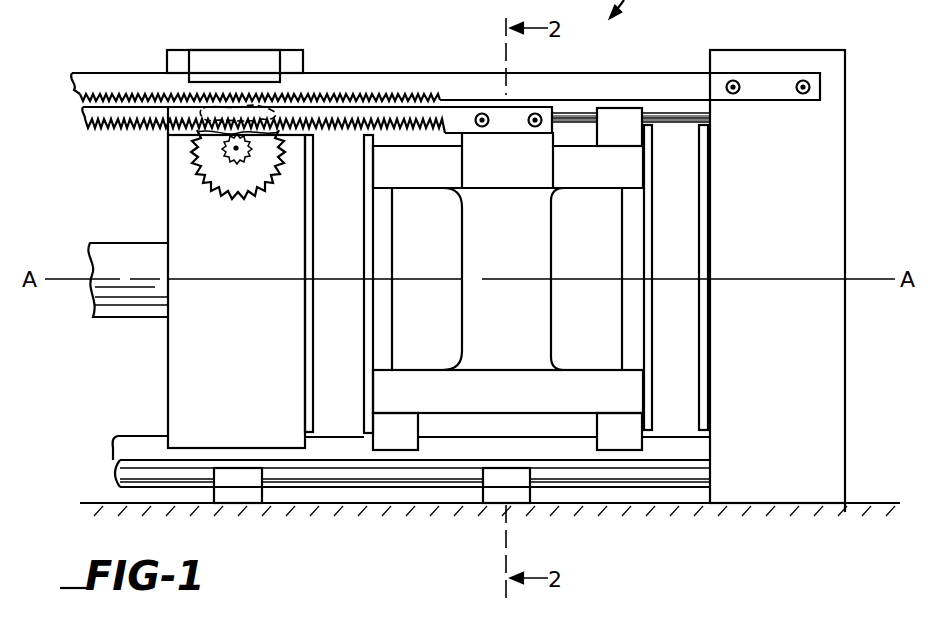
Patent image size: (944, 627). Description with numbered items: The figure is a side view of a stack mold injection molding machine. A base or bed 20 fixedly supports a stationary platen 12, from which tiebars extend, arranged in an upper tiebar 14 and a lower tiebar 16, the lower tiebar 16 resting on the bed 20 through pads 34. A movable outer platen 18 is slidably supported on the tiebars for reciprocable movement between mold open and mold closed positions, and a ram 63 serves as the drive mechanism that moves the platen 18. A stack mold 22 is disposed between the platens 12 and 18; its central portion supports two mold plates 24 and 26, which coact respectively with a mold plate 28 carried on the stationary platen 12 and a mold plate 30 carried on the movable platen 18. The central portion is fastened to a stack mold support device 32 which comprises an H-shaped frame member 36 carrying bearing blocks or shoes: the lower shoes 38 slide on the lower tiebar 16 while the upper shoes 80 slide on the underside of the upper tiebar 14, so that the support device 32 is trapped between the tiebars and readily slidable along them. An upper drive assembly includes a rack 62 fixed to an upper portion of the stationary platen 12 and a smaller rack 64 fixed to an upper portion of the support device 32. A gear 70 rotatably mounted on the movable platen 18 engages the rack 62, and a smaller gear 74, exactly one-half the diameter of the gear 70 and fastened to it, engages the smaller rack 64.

The stationary platen 12 is at (830, 182).
The upper tiebar 14 is at (667, 108).
The lower tiebar 16 is at (682, 466).
The movable outer platen 18 is at (186, 350).
The base or bed 20 is at (374, 512).
The stack mold 22 is at (611, 268).
The mold plate 24 is at (653, 212).
The mold plate 26 is at (363, 224).
The mold plate 28 is at (708, 178).
The mold plate 30 is at (309, 196).
The stack mold support device 32 is at (450, 311).
The pad 34 is at (240, 490).
The H-shaped frame member 36 is at (525, 315).
The lower bearing shoe 38 is at (626, 442).
The rack 62 is at (462, 85).
The ram 63 is at (118, 245).
The smaller rack 64 is at (371, 113).
The gear 70 is at (255, 105).
The smaller gear 74 is at (242, 165).
The upper bearing shoe 80 is at (618, 120).